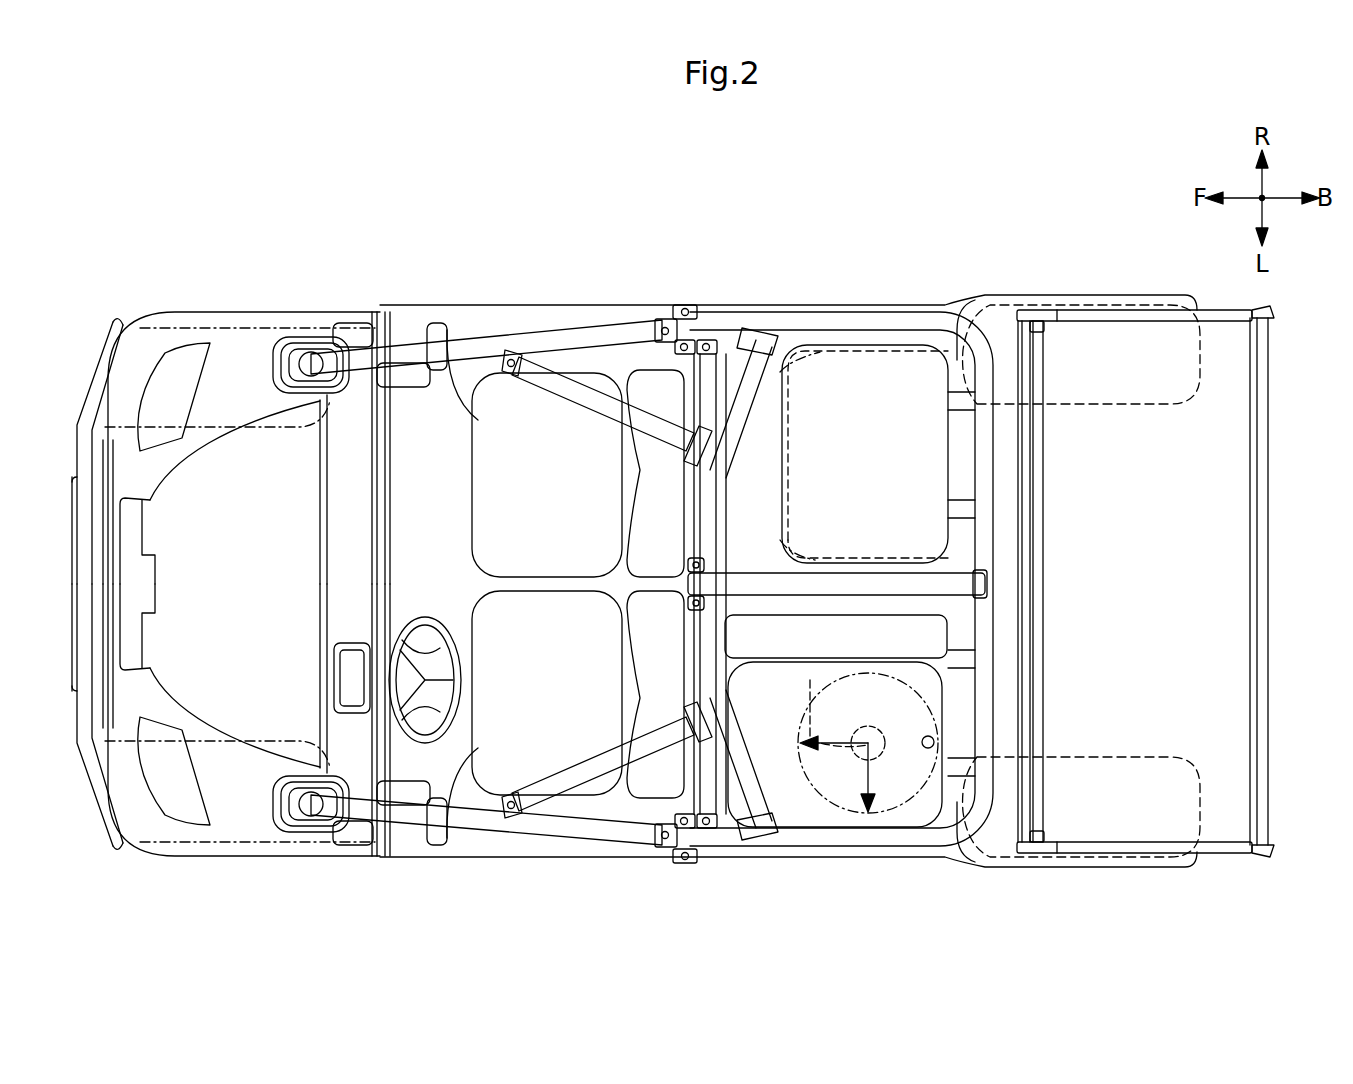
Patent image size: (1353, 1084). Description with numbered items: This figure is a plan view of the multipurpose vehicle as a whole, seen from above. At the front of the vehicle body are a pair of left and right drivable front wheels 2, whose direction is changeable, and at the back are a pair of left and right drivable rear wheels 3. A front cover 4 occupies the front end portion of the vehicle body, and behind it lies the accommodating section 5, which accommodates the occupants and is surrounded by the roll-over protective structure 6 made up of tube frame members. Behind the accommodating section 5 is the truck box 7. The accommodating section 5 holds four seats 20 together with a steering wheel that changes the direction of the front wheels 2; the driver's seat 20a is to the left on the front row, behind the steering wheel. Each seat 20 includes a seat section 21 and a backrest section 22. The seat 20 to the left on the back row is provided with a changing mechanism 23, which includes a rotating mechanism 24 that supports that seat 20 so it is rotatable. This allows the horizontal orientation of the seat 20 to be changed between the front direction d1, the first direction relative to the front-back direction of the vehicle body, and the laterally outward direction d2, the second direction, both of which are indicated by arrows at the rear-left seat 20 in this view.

The front wheels 2 is at (185, 310).
The rear wheels 3 is at (1000, 300).
The front cover 4 is at (235, 313).
The accommodating section 5 is at (768, 306).
The roll-over protective structure 6 is at (918, 862).
The truck box 7 is at (1276, 441).
The seats 20 is at (735, 644).
The driver's seat 20a is at (460, 754).
The seat section 21 is at (446, 345).
The backrest section 22 is at (642, 312).
The changing mechanism 23 is at (814, 800).
The rotating mechanism 24 is at (835, 803).
The front direction d1 is at (810, 720).
The laterally outward direction d2 is at (845, 775).